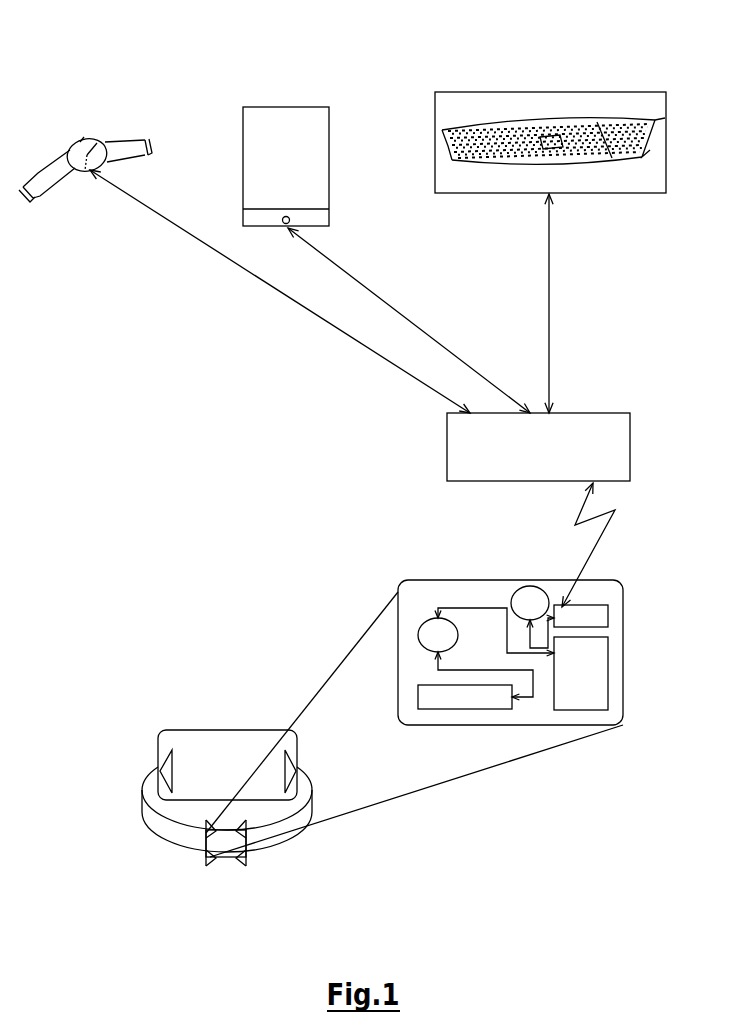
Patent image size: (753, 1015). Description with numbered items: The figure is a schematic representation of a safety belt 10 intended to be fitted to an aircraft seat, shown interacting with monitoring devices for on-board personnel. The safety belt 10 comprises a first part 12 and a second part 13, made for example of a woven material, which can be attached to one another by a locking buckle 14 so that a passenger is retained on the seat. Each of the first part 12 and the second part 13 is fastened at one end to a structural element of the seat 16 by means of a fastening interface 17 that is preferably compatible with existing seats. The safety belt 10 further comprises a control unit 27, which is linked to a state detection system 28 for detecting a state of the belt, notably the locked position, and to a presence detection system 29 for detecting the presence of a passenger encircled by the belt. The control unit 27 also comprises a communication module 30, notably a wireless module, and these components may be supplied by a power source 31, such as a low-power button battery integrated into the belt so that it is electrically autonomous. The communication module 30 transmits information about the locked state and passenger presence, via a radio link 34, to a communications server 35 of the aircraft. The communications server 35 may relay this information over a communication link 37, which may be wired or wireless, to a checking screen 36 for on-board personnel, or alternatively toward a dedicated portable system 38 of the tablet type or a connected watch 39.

The safety belt 10 is at (116, 694).
The first part 12 is at (155, 820).
The second part 13 is at (302, 825).
The locking buckle 14 is at (228, 848).
The seat 16 is at (202, 745).
The fastening interface 17 is at (160, 763).
The control unit 27 is at (581, 673).
The state detection system 28 is at (438, 635).
The presence detection system 29 is at (530, 603).
The communication module 30 is at (581, 616).
The power source 31 is at (465, 697).
The radio link 34 is at (608, 532).
The communications server 35 is at (538, 447).
The checking screen 36 is at (565, 103).
The communication link 37 is at (258, 279).
The dedicated portable system 38 is at (285, 132).
The connected watch 39 is at (106, 128).